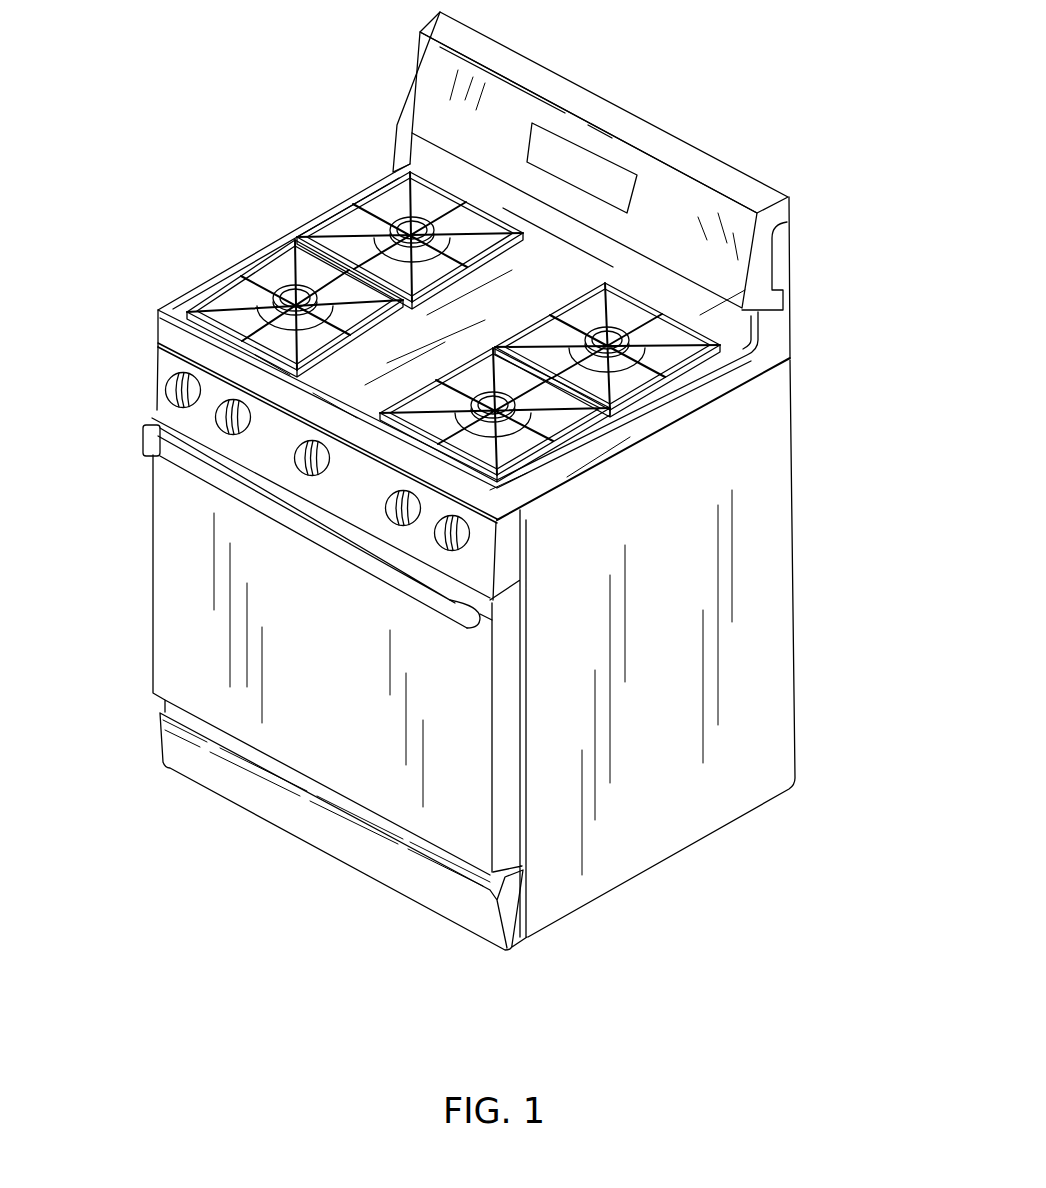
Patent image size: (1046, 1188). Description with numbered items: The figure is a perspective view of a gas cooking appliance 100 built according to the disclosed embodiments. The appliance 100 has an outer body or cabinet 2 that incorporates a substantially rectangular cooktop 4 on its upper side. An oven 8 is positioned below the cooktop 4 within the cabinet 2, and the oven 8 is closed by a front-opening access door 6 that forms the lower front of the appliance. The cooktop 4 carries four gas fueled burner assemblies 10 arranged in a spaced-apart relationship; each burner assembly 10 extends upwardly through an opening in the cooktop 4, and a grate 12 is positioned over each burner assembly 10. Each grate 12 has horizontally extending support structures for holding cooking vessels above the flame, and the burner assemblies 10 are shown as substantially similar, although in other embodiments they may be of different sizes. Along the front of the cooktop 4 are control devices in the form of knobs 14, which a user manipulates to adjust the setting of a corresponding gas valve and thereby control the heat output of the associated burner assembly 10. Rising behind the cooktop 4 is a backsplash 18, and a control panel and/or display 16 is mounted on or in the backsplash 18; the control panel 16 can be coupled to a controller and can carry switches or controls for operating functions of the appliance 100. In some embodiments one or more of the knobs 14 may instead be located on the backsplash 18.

The appliance 100 is at (768, 38).
The cabinet 2 is at (765, 603).
The cooktop 4 is at (552, 282).
The access door 6 is at (163, 582).
The oven 8 is at (148, 557).
The gas fueled burner assembly 10 is at (405, 222).
The grate 12 is at (218, 298).
The knob 14 is at (170, 392).
The control panel and/or display 16 is at (580, 157).
The backsplash 18 is at (680, 187).